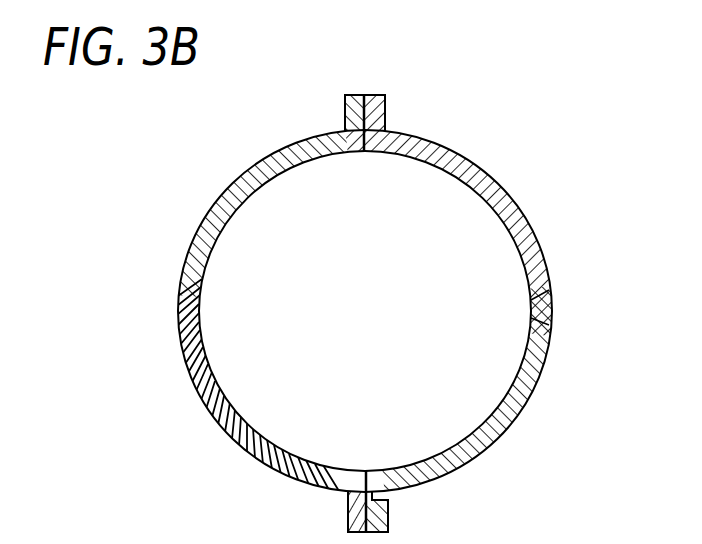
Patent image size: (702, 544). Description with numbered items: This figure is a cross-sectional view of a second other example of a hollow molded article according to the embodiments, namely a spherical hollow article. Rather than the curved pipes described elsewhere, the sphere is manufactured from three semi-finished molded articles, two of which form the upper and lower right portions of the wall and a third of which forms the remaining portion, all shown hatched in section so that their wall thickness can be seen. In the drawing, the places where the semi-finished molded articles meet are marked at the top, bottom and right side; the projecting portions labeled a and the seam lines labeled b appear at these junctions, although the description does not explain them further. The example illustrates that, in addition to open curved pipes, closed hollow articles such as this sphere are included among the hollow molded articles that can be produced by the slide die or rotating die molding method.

The flange / joint tab a is at (385, 129).
The joint seam line b is at (340, 153).